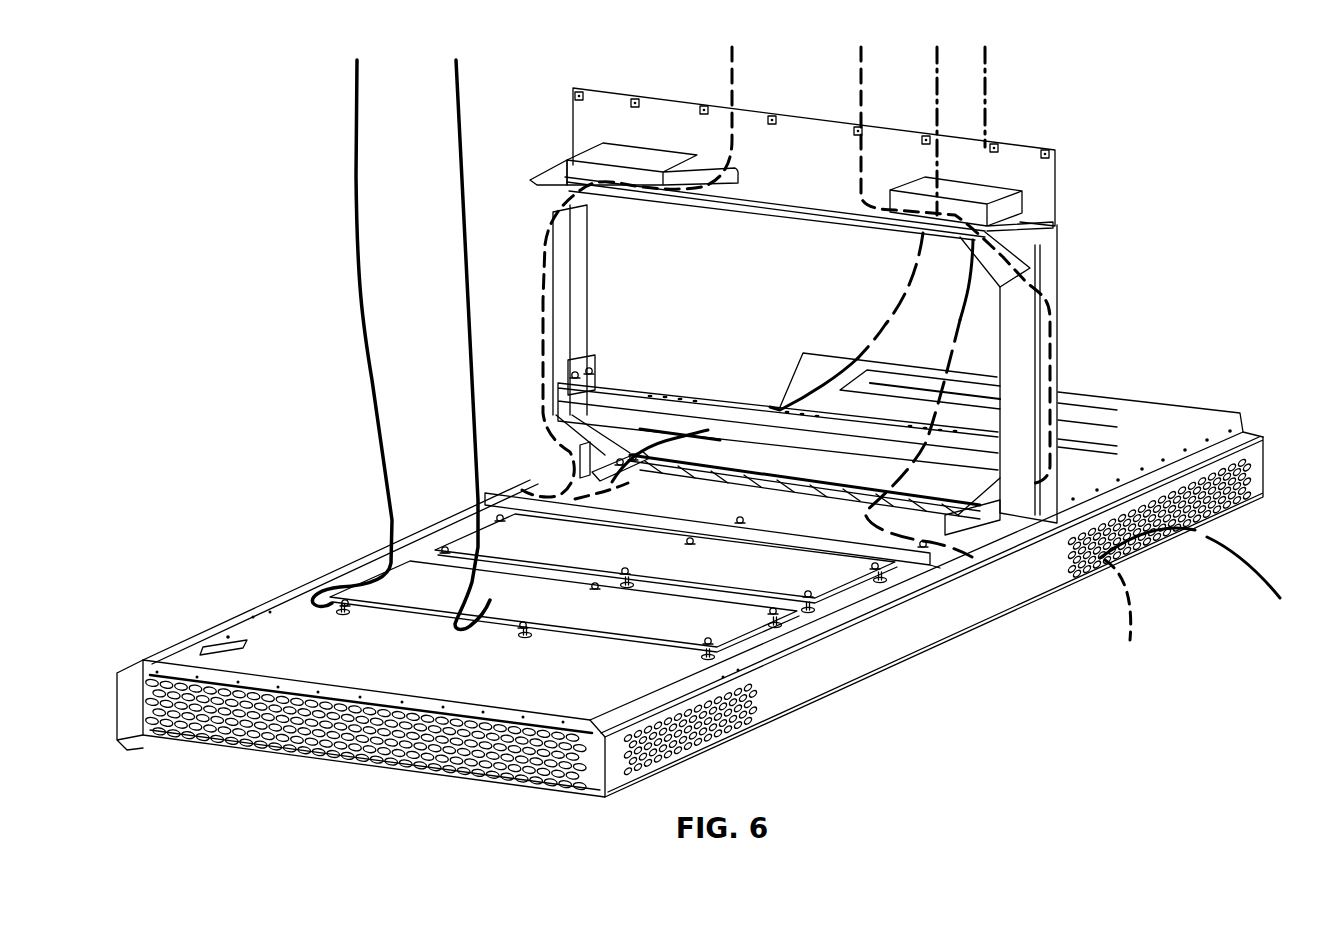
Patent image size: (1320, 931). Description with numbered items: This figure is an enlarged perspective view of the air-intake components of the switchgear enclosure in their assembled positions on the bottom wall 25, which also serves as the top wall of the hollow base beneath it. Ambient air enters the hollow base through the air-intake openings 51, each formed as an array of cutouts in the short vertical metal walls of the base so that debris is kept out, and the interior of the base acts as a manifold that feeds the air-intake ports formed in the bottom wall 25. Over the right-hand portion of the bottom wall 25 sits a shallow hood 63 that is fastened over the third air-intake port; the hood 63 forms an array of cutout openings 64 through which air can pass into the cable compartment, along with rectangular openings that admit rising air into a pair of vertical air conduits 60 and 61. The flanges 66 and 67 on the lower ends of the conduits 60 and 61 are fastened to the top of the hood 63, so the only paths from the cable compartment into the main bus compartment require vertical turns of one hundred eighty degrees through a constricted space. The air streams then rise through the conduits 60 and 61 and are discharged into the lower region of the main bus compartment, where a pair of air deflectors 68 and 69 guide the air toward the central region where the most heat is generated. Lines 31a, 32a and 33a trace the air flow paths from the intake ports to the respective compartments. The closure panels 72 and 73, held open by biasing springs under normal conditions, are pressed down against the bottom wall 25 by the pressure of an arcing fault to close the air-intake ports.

The bottom wall 25 is at (414, 671).
The air-intake openings 51 is at (478, 753).
The air flow path line 31a is at (357, 119).
The air flow path line 32a is at (731, 63).
The air flow path line 33a is at (935, 90).
The vertical air conduit 60 is at (543, 308).
The vertical air conduit 61 is at (1052, 347).
The shallow hood 63 is at (1172, 412).
The cutout openings 64 is at (705, 476).
The flange 66 is at (622, 452).
The flange 67 is at (964, 522).
The air deflector 68 is at (606, 150).
The air deflector 69 is at (982, 203).
The closure panel 72 is at (657, 622).
The closure panel 73 is at (752, 579).